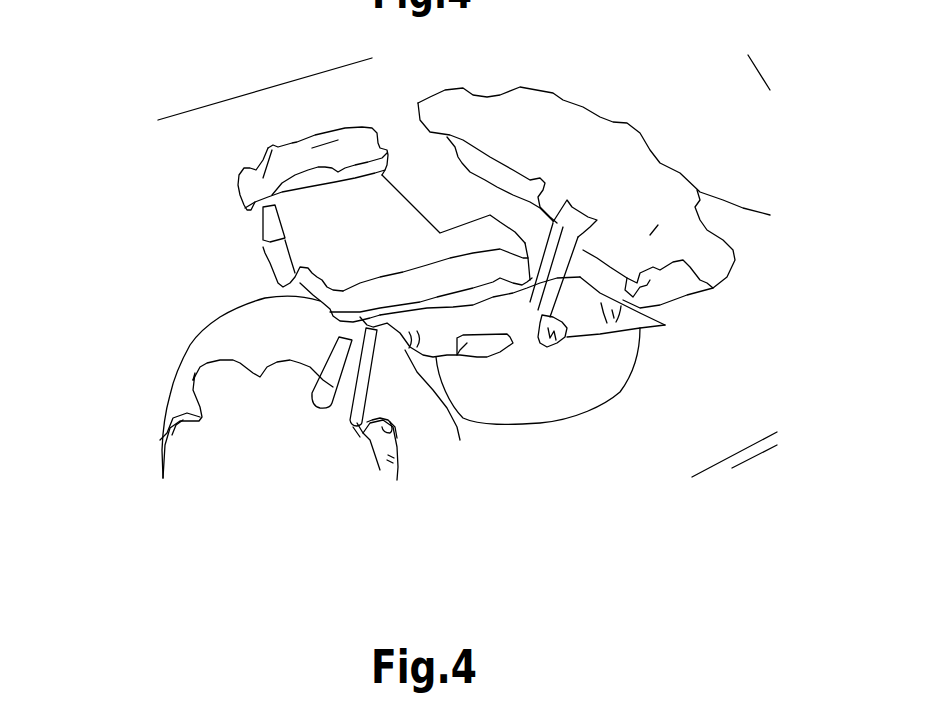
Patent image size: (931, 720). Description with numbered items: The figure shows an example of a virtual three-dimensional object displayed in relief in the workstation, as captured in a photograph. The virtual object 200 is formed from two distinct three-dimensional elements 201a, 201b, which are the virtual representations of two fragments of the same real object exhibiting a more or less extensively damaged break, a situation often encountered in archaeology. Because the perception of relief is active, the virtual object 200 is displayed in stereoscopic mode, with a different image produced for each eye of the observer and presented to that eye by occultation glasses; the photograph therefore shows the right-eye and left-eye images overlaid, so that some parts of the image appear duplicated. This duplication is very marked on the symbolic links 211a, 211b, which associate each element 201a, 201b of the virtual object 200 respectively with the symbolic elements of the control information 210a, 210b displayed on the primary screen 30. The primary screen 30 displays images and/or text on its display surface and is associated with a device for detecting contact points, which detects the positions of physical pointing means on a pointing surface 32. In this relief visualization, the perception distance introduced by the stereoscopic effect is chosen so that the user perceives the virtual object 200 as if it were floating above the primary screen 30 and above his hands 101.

The primary screen 30 is at (141, 337).
The pointing surface 32 is at (238, 245).
The hands 101 is at (725, 228).
The virtual object 200 is at (424, 105).
The first three-dimensional element 201a is at (268, 148).
The second three-dimensional element 201b is at (497, 133).
The first symbolic element of control information 210a is at (460, 440).
The second symbolic element of control information 210b is at (553, 427).
The first symbolic link 211a is at (325, 387).
The second symbolic link 211b is at (665, 325).